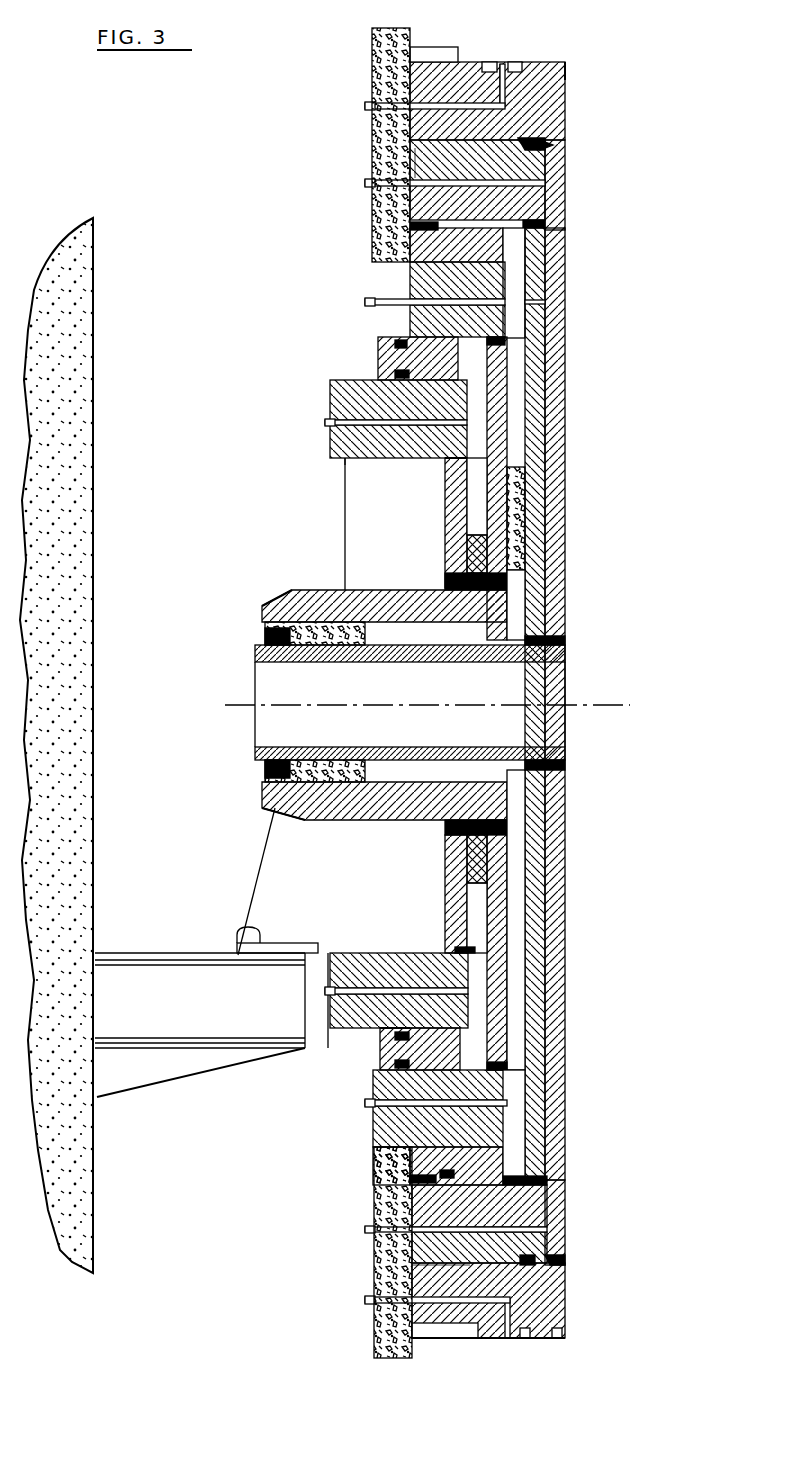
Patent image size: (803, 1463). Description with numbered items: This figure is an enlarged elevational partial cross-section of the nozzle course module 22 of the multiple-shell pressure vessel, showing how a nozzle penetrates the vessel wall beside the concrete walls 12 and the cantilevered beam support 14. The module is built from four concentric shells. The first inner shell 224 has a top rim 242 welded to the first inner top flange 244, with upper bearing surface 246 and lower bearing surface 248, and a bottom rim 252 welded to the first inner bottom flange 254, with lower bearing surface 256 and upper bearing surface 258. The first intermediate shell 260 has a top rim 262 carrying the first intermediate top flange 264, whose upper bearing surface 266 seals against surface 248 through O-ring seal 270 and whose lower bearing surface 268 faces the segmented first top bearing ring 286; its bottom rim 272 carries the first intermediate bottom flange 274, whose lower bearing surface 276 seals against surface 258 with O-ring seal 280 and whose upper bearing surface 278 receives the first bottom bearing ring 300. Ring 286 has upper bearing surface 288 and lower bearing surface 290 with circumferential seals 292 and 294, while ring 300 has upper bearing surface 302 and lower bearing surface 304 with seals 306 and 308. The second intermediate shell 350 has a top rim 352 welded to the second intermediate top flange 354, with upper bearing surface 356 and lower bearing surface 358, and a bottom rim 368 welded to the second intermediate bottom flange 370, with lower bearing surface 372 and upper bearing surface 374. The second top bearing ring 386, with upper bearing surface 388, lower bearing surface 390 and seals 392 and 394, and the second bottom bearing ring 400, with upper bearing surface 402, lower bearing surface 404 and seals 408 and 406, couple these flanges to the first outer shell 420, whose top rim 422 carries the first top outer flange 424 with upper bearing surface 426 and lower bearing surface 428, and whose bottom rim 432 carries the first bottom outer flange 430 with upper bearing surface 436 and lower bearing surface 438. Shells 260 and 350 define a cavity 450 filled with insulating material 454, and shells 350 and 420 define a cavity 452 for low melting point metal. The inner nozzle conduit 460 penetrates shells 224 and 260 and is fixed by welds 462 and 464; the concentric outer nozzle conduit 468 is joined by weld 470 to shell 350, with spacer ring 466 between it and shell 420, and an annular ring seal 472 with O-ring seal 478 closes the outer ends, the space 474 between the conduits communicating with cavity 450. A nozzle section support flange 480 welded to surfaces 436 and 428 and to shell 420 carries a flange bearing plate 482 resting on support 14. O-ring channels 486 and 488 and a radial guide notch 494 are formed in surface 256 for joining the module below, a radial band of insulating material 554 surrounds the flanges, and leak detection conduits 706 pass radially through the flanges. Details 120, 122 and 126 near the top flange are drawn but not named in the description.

The concrete walls 12 is at (82, 560).
The cantilevered beams 14 is at (145, 953).
The nozzle course module 22 is at (690, 432).
The notch 120 is at (514, 62).
The outer surface 122 is at (548, 60).
The plate 126 is at (426, 47).
The first inner shell 224 is at (545, 250).
The top rim 242 is at (553, 146).
The nozzle module first inner top flange 244 is at (545, 97).
The upper bearing surface 246 is at (488, 62).
The lower bearing surface 248 is at (388, 160).
The bottom rim 252 is at (555, 1260).
The nozzle module first inner bottom flange 254 is at (555, 1300).
The lower bearing surface 256 is at (565, 1338).
The upper bearing surface 258 is at (398, 1251).
The first intermediate shell 260 is at (540, 420).
The top rim 262 is at (545, 225).
The first intermediate top flange 264 is at (540, 212).
The upper bearing surface 266 is at (420, 150).
The lower bearing surface 268 is at (410, 237).
The O-ring seal 270 is at (535, 142).
The bottom rim 272 is at (528, 1178).
The nozzle module first intermediate bottom flange 274 is at (545, 1237).
The lower bearing surface 276 is at (412, 1270).
The upper bearing surface 278 is at (415, 1180).
The O-ring seal 280 is at (525, 1266).
The nozzle module first top bearing ring 286 is at (415, 248).
The upper bearing surface 288 is at (470, 210).
The lower bearing surface 290 is at (470, 286).
The upper circumferential seal 292 is at (456, 206).
The lower circumferential seal 294 is at (456, 281).
The nozzle module first bottom bearing ring 300 is at (415, 1172).
The upper bearing surface 302 is at (448, 1131).
The lower bearing surface 304 is at (487, 1209).
The upper circumferential seal 306 is at (434, 1126).
The lower circumferential seal 308 is at (479, 1206).
The second intermediate shell 350 is at (497, 375).
The top rim 352 is at (505, 341).
The nozzle module second intermediate top flange 354 is at (385, 320).
The upper bearing surface 356 is at (385, 264).
The lower bearing surface 358 is at (385, 343).
The bottom rim 368 is at (505, 1064).
The nozzle module second intermediate bottom flange 370 is at (378, 1128).
The lower bearing surface 372 is at (375, 1162).
The upper bearing surface 374 is at (375, 1074).
The nozzle module second top bearing ring 386 is at (385, 366).
The upper bearing surface 388 is at (470, 329).
The lower bearing surface 390 is at (430, 406).
The upper circumferential seal 392 is at (456, 324).
The lower circumferential seal 394 is at (414, 401).
The nozzle module second bottom bearing ring 400 is at (385, 1060).
The upper bearing surface 402 is at (438, 1016).
The lower bearing surface 404 is at (448, 1092).
The lower circumferential seal 406 is at (434, 1087).
The upper circumferential seal 408 is at (424, 1011).
The first outer shell 420 is at (450, 522).
The top rim 422 is at (450, 460).
The nozzle module first top outer flange 424 is at (338, 445).
The upper bearing surface 426 is at (348, 380).
The lower bearing surface 428 is at (345, 462).
The first bottom outer flange 430 is at (335, 1010).
The bottom rim 432 is at (455, 950).
The upper bearing surface 436 is at (358, 953).
The lower bearing surface 438 is at (378, 1032).
The cavity 450 is at (512, 441).
The cavity 452 is at (477, 492).
The insulating material 454 is at (520, 530).
The inner nozzle conduit 460 is at (566, 675).
The weld 462 is at (555, 640).
The weld 464 is at (518, 640).
The spacer ring 466 is at (470, 548).
The outer nozzle conduit 468 is at (302, 577).
The weld 470 is at (448, 580).
The annular ring seal 472 is at (266, 635).
The cavity 474 is at (380, 640).
The O-ring seal 478 is at (264, 606).
The nozzle section support flange 480 is at (345, 525).
The flange bearing plate 482 is at (237, 935).
The first circumferential O-ring channel 486 is at (527, 1340).
The second circumferential O-ring channel 488 is at (507, 1338).
The radial guide notch 494 is at (460, 1338).
The radial band of insulating material 554 is at (380, 32).
The leak detection conduits 706 is at (420, 106).